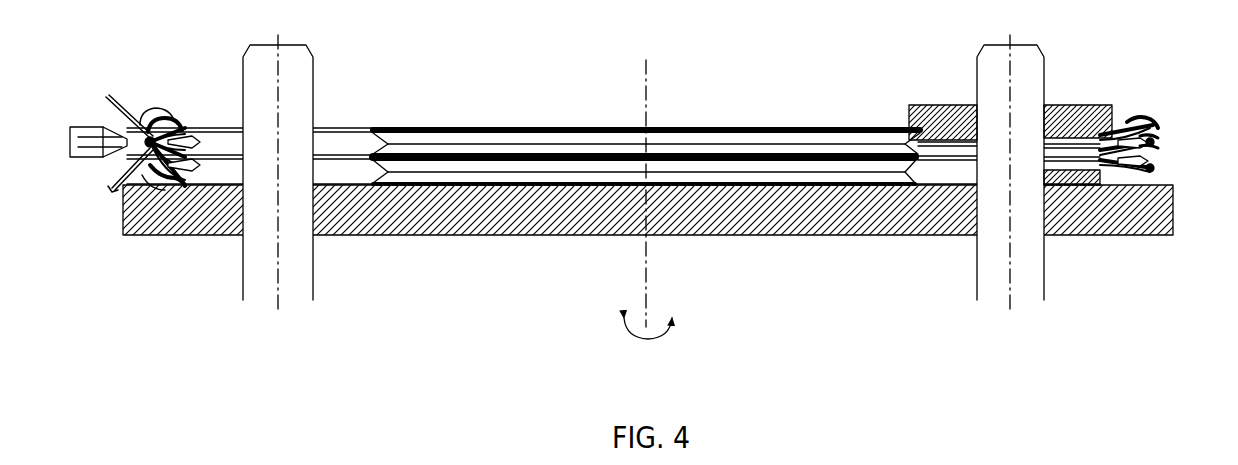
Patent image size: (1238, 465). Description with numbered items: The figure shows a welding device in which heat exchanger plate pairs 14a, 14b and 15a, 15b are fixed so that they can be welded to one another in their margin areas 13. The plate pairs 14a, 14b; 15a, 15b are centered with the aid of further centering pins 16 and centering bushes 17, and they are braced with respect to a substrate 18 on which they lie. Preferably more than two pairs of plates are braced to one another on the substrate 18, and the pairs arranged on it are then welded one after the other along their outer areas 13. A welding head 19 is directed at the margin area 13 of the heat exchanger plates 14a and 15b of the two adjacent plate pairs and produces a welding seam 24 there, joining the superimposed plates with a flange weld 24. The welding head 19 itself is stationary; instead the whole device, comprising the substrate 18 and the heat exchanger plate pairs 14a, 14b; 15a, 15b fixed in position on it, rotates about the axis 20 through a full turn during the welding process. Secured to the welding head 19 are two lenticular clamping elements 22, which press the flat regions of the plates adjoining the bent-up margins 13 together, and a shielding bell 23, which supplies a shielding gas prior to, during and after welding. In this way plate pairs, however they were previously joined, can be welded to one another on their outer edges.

The margin area 13 is at (146, 100).
The heat exchanger plate 14a is at (1156, 236).
The heat exchanger plate 14b is at (1157, 146).
The heat exchanger plate 15a is at (1149, 116).
The heat exchanger plate 15b is at (1152, 138).
The centering pin 16 is at (253, 280).
The centering bush 17 is at (1076, 175).
The substrate 18 is at (445, 236).
The welding head 19 is at (82, 128).
The axis 20 is at (650, 297).
The clamping element 22 is at (115, 127).
The shielding bell 23 is at (107, 102).
The welding seam 24 is at (153, 116).